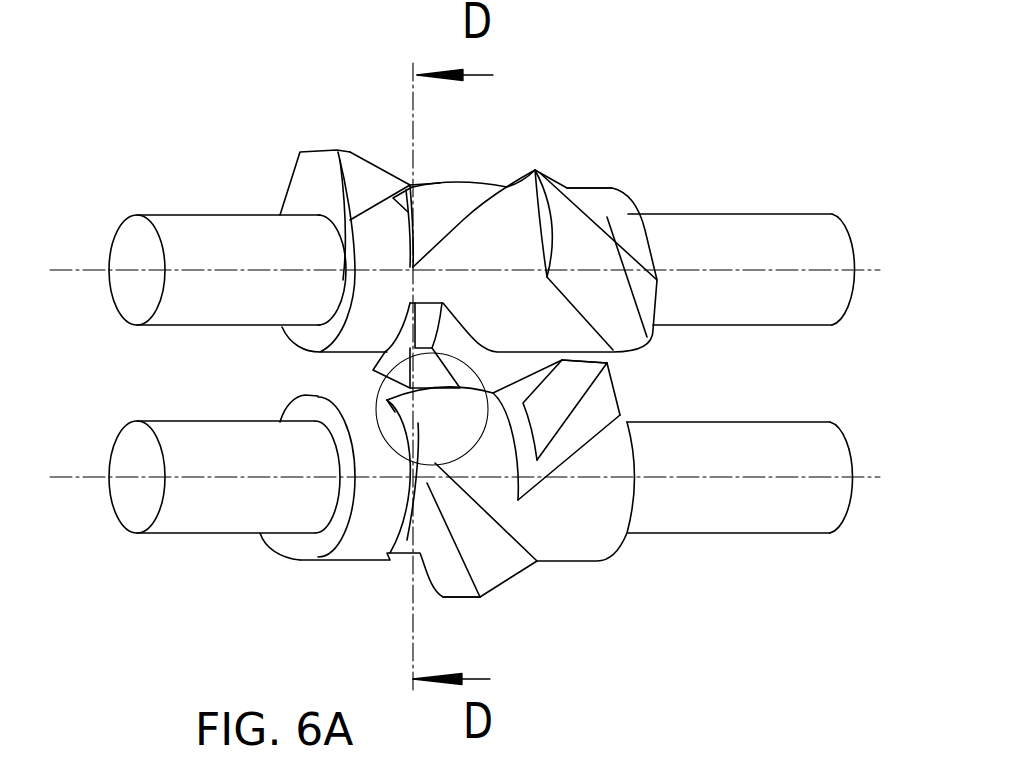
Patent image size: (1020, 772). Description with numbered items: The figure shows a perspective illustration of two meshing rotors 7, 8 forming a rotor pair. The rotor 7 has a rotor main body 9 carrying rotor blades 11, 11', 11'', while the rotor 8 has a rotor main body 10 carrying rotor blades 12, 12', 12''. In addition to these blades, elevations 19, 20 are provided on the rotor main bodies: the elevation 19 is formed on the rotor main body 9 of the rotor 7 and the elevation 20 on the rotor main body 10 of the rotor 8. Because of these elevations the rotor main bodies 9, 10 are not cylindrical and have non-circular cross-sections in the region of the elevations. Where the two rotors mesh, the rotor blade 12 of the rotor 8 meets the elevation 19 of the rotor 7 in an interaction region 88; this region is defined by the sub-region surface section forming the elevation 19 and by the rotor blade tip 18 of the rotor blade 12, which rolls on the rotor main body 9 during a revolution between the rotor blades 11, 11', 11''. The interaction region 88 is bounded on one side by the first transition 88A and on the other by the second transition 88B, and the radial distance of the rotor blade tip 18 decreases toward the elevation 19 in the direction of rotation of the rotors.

The rotor 7 is at (753, 516).
The rotor 8 is at (753, 236).
The rotor main body 9 is at (537, 515).
The rotor main body 10 is at (502, 247).
The rotor blade 11 is at (505, 620).
The rotor blade 11' is at (181, 602).
The rotor blade 11'' is at (693, 377).
The rotor blade 12 is at (234, 262).
The rotor blade 12' is at (637, 141).
The rotor blade 12'' is at (351, 175).
The rotor blade tip 18 is at (425, 373).
The elevation 19 is at (428, 400).
The elevation 20 is at (452, 198).
The interaction region 88 is at (405, 437).
The first transition 88A is at (460, 412).
The second transition 88B is at (395, 412).